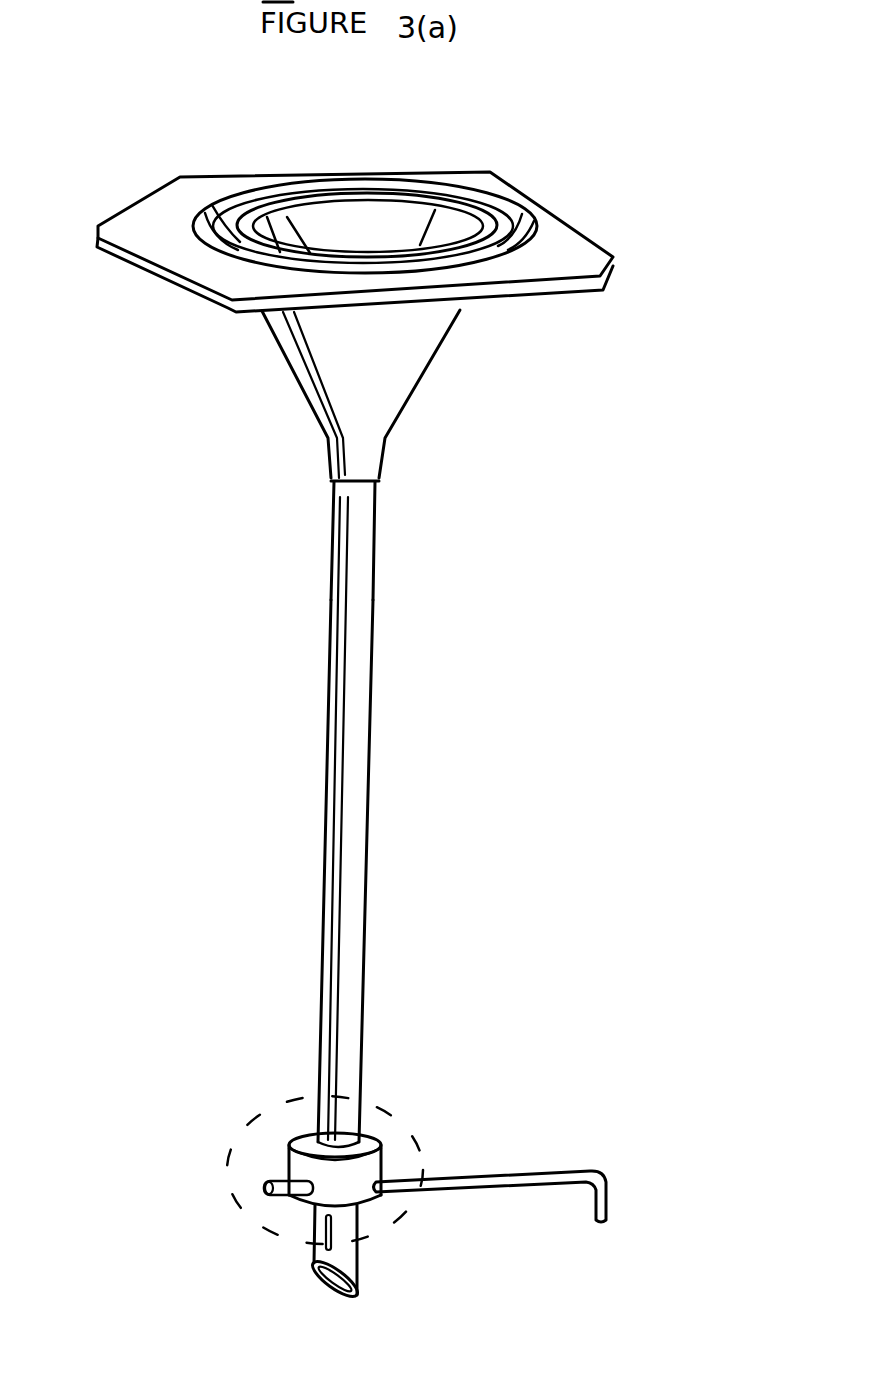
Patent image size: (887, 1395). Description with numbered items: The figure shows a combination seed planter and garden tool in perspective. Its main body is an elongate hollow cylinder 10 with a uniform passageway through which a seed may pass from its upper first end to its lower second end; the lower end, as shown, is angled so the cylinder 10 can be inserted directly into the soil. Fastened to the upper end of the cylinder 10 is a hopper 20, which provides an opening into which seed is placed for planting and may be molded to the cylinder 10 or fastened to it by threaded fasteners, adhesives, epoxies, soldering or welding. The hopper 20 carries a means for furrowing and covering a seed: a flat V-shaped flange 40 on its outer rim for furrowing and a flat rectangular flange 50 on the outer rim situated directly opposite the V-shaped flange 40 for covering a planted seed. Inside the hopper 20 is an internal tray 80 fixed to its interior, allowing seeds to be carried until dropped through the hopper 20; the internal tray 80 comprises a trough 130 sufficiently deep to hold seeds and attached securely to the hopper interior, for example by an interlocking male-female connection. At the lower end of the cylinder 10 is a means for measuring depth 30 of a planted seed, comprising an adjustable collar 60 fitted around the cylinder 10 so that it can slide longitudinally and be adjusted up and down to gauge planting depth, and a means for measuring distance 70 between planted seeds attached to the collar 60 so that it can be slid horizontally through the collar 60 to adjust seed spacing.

The elongate hollow cylinder 10 is at (370, 828).
The hopper 20 is at (413, 398).
The means for measuring depth 30 is at (418, 1133).
The V-shaped flange 40 is at (148, 200).
The rectangular flange 50 is at (540, 203).
The adjustable collar 60 is at (288, 1142).
The means for measuring distance 70 is at (607, 1178).
The internal tray 80 is at (420, 172).
The trough 130 is at (537, 238).